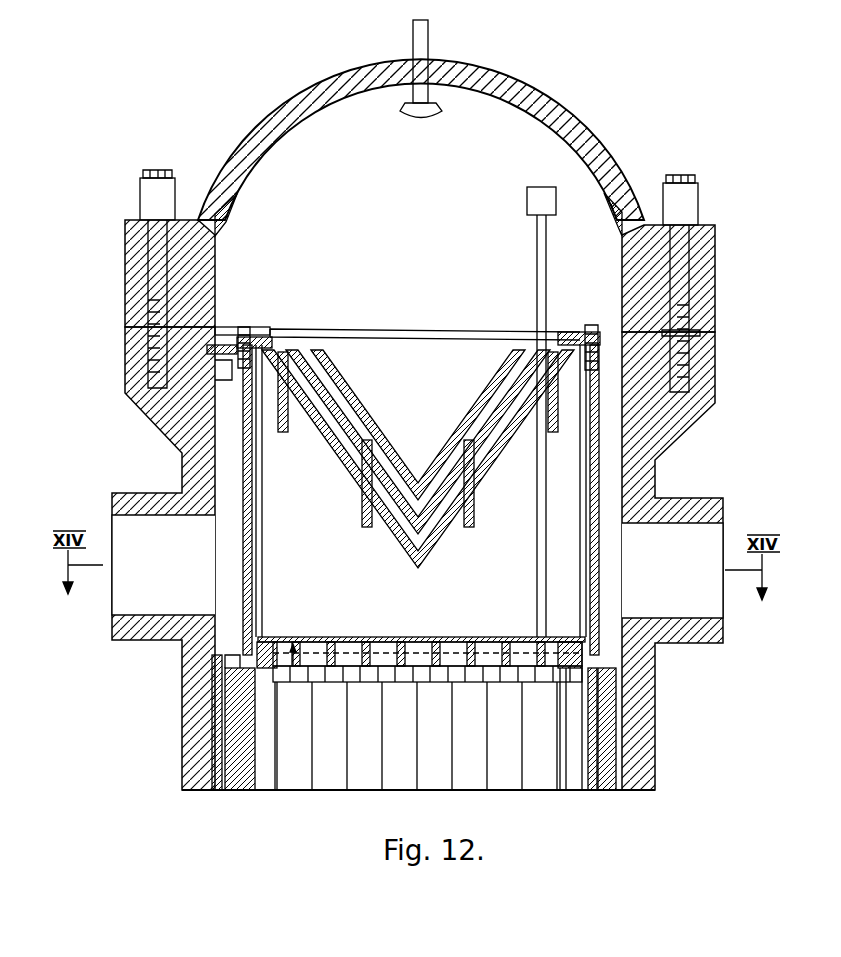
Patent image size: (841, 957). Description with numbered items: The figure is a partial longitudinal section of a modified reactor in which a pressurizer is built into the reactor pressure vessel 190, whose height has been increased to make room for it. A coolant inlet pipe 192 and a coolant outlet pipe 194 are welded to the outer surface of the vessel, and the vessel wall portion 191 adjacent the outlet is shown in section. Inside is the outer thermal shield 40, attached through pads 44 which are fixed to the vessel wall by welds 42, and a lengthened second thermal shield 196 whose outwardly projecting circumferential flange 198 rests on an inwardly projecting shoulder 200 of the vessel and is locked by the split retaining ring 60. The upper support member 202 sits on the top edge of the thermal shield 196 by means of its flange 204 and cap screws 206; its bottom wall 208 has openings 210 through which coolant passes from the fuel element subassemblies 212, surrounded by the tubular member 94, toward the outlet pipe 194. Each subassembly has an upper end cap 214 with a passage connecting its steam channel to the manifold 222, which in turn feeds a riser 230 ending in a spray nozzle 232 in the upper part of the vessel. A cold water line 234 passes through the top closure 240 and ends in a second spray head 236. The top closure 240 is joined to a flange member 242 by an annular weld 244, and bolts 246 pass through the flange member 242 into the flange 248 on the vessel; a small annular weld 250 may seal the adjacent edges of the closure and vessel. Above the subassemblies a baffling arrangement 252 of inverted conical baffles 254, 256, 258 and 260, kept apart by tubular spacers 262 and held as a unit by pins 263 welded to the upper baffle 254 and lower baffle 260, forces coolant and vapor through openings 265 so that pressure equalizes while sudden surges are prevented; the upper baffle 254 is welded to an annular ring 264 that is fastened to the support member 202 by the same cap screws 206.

The outer cylindrical thermal shield 40 is at (603, 785).
The welds 42 is at (225, 700).
The pads 44 is at (212, 680).
The split retaining ring 60 is at (222, 344).
The tubular member 94 is at (560, 714).
The pressure vessel 190 is at (655, 712).
The vessel body flange 191 is at (640, 480).
The coolant inlet pipe 192 is at (130, 628).
The coolant outlet pipe 194 is at (706, 630).
The second thermal shield 196 is at (242, 525).
The circumferential flange 198 is at (228, 360).
The shoulder 200 is at (222, 380).
The upper support member 202 is at (262, 552).
The flange 204 is at (268, 336).
The cap screws 206 is at (244, 326).
The bottom wall 208 is at (262, 636).
The openings 210 is at (345, 655).
The fuel element subassemblies 212 is at (540, 775).
The upper end cap 214 is at (392, 660).
The manifold 222 is at (318, 631).
The riser 230 is at (537, 537).
The spray nozzle 232 is at (527, 202).
The cold water line 234 is at (428, 42).
The second spray head 236 is at (436, 110).
The top closure 240 is at (575, 150).
The flange member 242 is at (645, 224).
The annular weld 244 is at (616, 195).
The bolts 246 is at (158, 176).
The flange 248 is at (712, 368).
The small annular weld 250 is at (700, 332).
The baffling arrangement 252 is at (332, 404).
The upper conical baffle 254 is at (380, 458).
The conical baffle 256 is at (396, 486).
The conical baffle 258 is at (508, 440).
The conical baffle 260 is at (495, 478).
The tubular spacers 262 is at (355, 440).
The pins 263 is at (372, 450).
The annular ring 264 is at (570, 331).
The openings 265 is at (440, 470).